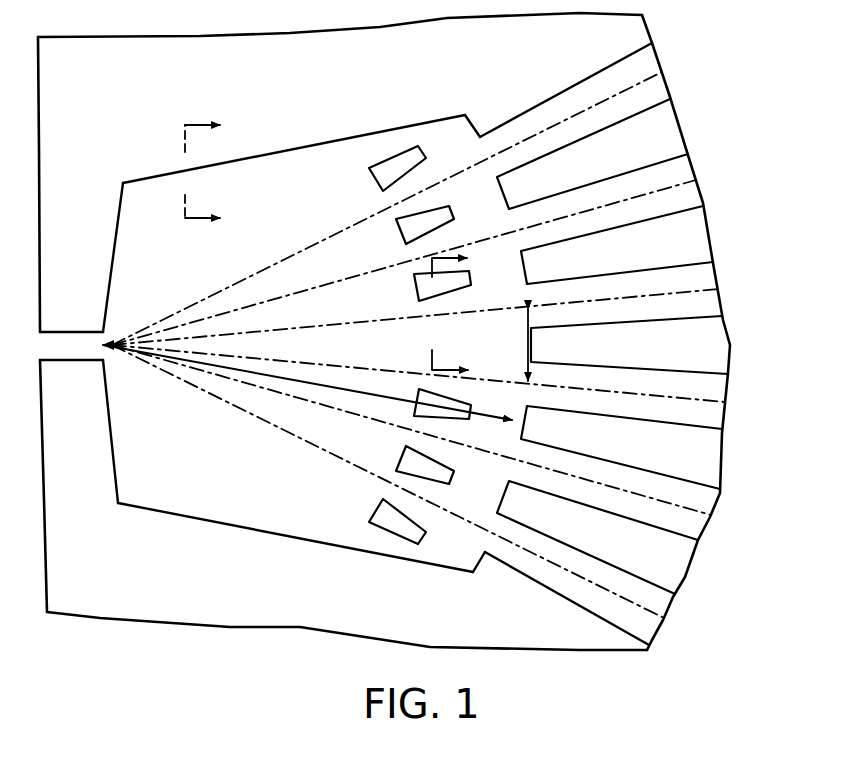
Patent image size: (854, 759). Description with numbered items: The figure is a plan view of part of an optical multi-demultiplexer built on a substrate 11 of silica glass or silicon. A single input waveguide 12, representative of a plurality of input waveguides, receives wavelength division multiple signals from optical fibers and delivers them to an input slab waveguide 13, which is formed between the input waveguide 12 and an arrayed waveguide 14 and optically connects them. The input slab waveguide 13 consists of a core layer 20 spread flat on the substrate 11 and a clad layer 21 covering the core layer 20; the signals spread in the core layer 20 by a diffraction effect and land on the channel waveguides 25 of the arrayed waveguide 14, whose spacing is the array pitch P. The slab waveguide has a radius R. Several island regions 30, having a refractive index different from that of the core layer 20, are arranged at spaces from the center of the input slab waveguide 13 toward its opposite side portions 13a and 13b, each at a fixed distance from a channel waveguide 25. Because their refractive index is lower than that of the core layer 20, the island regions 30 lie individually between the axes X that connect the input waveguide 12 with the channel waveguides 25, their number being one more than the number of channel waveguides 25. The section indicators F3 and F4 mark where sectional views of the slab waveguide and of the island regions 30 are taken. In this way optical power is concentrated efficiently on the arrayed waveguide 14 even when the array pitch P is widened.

The substrate 11 is at (98, 618).
The input waveguide 12 is at (72, 338).
The input slab waveguide 13 is at (301, 334).
The side portion 13a is at (321, 153).
The side portion 13b is at (401, 552).
The arrayed waveguide 14 is at (631, 337).
The core layer 20 is at (210, 438).
The clad layer 21 is at (210, 578).
The channel waveguide 25 is at (657, 85).
The island region 30 is at (400, 170).
The axis X is at (240, 303).
The slab waveguide radius R is at (321, 392).
The array pitch P is at (527, 333).
The section line F3 is at (221, 175).
The section line F4 is at (472, 313).